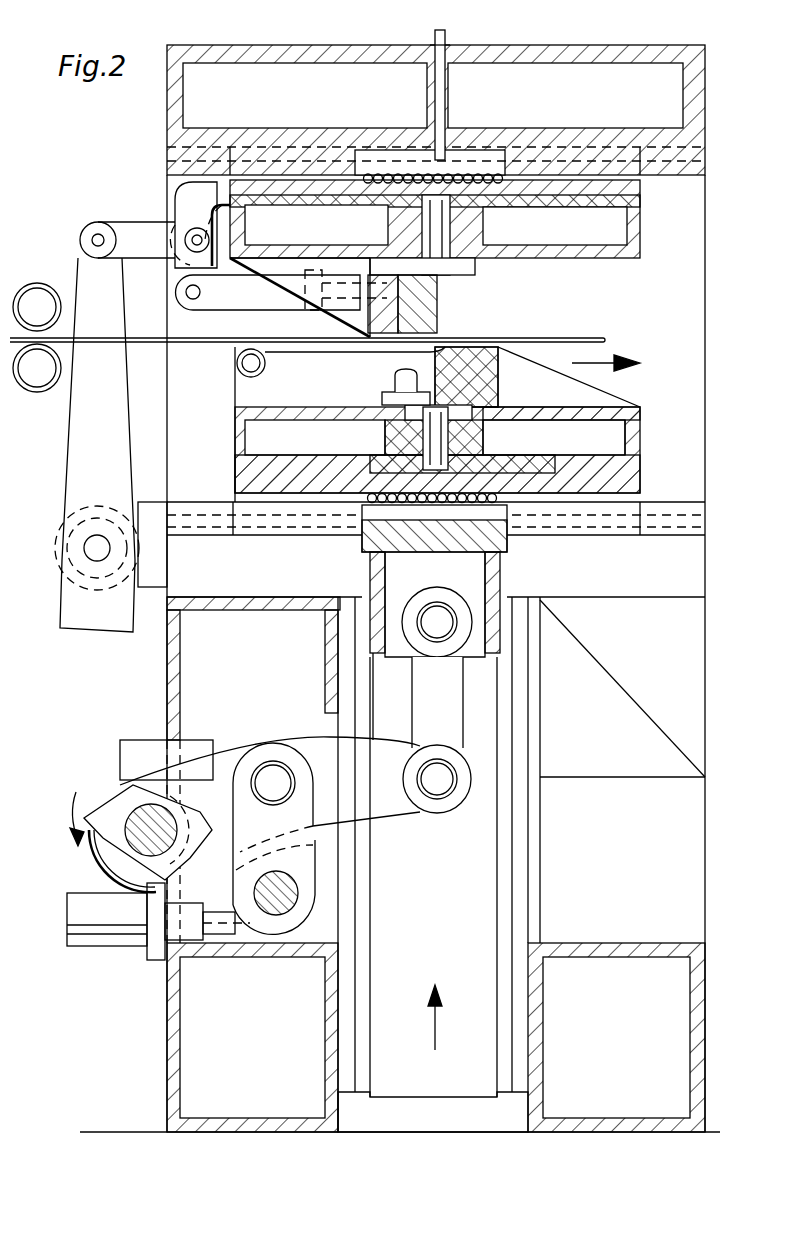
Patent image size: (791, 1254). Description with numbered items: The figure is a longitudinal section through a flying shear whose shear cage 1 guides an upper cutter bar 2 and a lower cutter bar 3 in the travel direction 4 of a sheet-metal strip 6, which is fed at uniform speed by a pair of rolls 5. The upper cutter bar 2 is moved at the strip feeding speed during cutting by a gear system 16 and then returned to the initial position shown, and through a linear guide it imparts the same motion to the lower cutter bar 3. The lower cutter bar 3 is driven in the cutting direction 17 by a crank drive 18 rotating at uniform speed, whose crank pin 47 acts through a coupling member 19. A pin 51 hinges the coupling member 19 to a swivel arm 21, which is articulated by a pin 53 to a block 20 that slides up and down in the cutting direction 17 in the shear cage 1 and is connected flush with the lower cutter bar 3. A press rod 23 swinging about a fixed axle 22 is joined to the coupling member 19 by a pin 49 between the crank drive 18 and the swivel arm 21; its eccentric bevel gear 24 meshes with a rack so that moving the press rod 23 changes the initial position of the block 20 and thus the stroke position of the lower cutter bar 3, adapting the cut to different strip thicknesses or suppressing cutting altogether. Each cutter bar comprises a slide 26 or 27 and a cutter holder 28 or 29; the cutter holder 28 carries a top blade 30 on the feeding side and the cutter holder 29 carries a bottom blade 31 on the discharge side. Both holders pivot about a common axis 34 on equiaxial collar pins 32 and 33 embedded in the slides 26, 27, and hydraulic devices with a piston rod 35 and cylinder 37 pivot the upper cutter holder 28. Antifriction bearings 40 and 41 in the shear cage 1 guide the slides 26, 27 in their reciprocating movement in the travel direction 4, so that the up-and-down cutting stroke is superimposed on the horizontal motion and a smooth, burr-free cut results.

The shear cage 1 is at (693, 101).
The upper cutter bar 2 is at (230, 178).
The lower cutter bar 3 is at (238, 425).
The travel direction 4 is at (605, 362).
The pair of rolls 5 is at (40, 305).
The sheet-metal strip 6 is at (200, 343).
The gear system 16 is at (88, 455).
The cutting direction 17 is at (437, 1032).
The crank drive 18 is at (150, 796).
The coupling member 19 is at (393, 792).
The block 20 is at (467, 574).
The swivel arm 21 is at (450, 712).
The fixed axle 22 is at (262, 886).
The press rod 23 is at (271, 762).
The eccentric bevel gear 24 is at (230, 923).
The slide 26 is at (636, 193).
The slide 27 is at (620, 484).
The cutter holder 28 is at (200, 222).
The cutter holder 29 is at (640, 414).
The top blade 30 is at (414, 308).
The bottom blade 31 is at (478, 392).
The collar pin 32 is at (432, 222).
The collar pin 33 is at (440, 437).
The common axis 34 is at (437, 68).
The piston rod 35 is at (322, 306).
The cylinder 37 is at (228, 282).
The antifriction bearing 40 is at (462, 176).
The antifriction bearing 41 is at (492, 500).
The crank pin 47 is at (110, 850).
The pin 49 is at (268, 783).
The pin 51 is at (440, 784).
The pin 53 is at (437, 612).